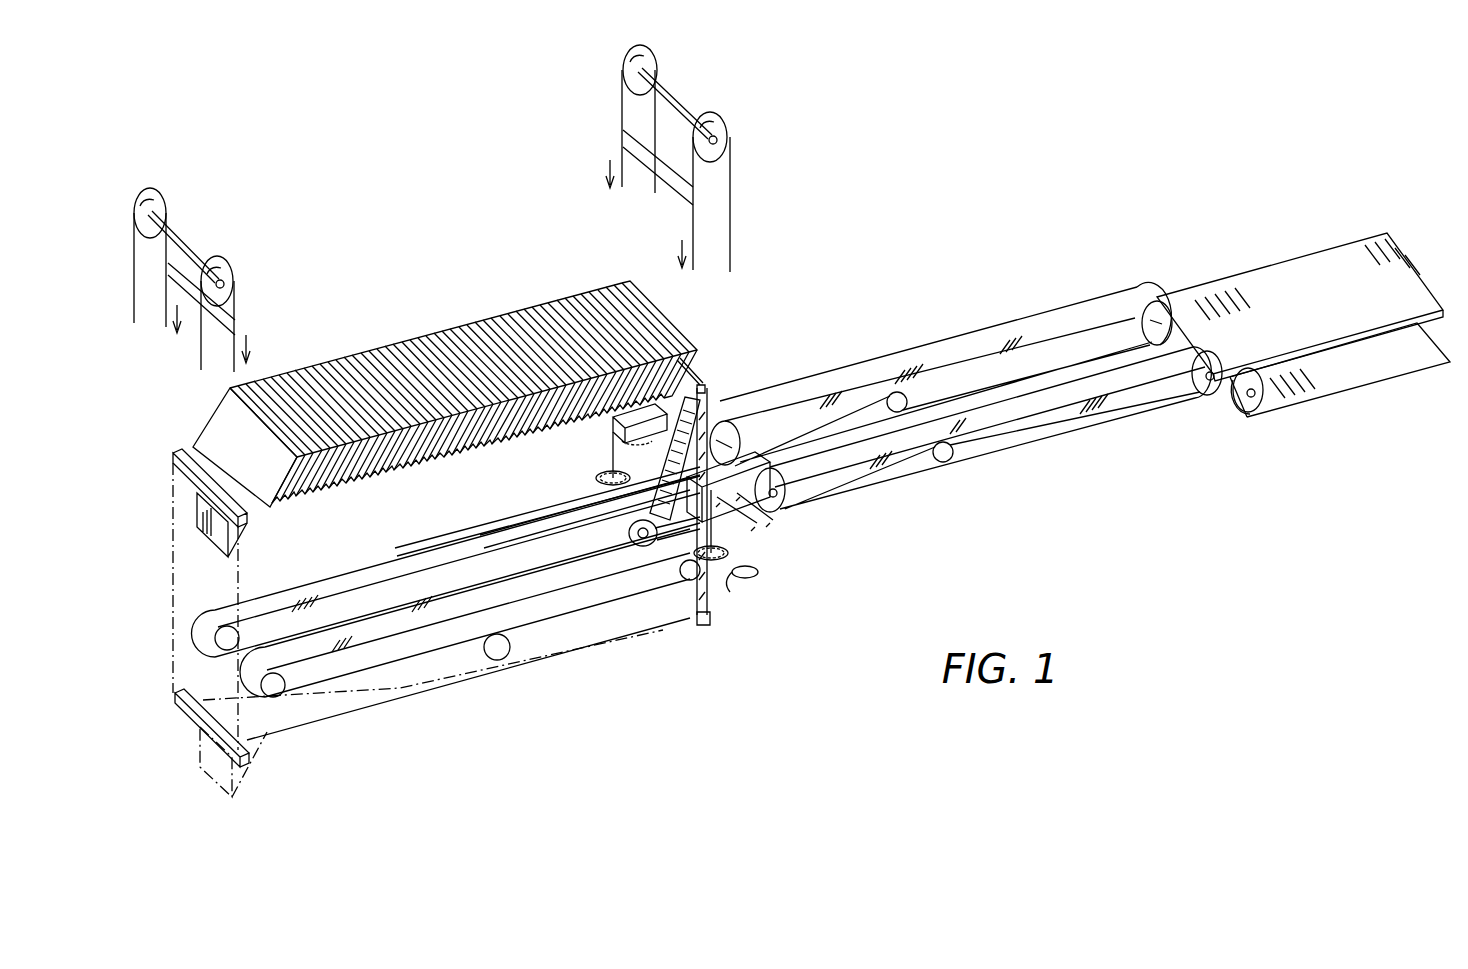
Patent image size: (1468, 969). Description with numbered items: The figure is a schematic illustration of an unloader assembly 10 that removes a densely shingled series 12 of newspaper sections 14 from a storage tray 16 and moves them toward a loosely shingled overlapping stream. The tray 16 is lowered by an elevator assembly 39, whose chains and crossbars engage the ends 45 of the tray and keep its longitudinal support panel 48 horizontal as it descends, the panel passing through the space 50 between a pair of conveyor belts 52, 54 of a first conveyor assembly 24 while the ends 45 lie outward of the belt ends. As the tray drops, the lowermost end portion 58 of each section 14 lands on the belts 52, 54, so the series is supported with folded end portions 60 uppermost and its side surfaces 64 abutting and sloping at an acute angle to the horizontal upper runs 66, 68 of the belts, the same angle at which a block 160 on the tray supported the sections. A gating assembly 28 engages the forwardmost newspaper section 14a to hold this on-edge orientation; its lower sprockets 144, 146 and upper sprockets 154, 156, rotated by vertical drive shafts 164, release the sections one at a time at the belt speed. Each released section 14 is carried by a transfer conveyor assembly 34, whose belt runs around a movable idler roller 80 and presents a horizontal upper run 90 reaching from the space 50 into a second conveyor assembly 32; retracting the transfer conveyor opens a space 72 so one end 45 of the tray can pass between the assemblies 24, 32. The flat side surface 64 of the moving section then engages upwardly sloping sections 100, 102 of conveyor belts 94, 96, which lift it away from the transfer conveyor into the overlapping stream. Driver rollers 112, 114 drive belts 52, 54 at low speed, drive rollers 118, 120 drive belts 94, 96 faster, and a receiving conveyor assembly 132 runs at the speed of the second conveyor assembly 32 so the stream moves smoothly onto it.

The unloader assembly 10 is at (901, 141).
The densely shingled series of newspaper sections 12 is at (454, 381).
The newspaper sections 14 is at (493, 381).
The forwardmost newspaper section 14a is at (680, 340).
The storage tray 16 is at (180, 523).
The first conveyor assembly 24 is at (394, 618).
The gating assembly 28 is at (588, 450).
The second conveyor assembly 32 is at (971, 383).
The transfer conveyor assembly 34 is at (631, 562).
The elevator assembly 39 is at (672, 148).
The ends of the support tray 45 is at (173, 455).
The support panel 48 is at (250, 515).
The space between conveyor belts 50 is at (348, 620).
The conveyor belt 52 is at (465, 641).
The conveyor belt 54 is at (385, 681).
The lowermost end portion 58 is at (373, 474).
The folded end portions 60 is at (566, 300).
The side surfaces 64 is at (230, 423).
The upper run 66 is at (482, 535).
The upper run 68 is at (555, 580).
The space 72 is at (720, 568).
The movable idler roller 80 is at (650, 535).
The upper run of transfer conveyor belt 90 is at (668, 458).
The conveyor belt 94 is at (873, 358).
The conveyor belt 96 is at (1015, 390).
The upwardly sloping section 100 is at (703, 390).
The upwardly sloping section 102 is at (765, 545).
The driver roller 112 is at (585, 505).
The driver roller 114 is at (703, 475).
The drive roller 118 is at (735, 440).
The drive roller 120 is at (790, 480).
The receiving conveyor assembly 132 is at (1300, 265).
The lower sprocket 144 is at (598, 485).
The lower sprocket 146 is at (765, 560).
The upper sprocket 154 is at (607, 450).
The upper sprocket 156 is at (770, 520).
The block 160 is at (650, 318).
The drive shafts 164 is at (570, 468).